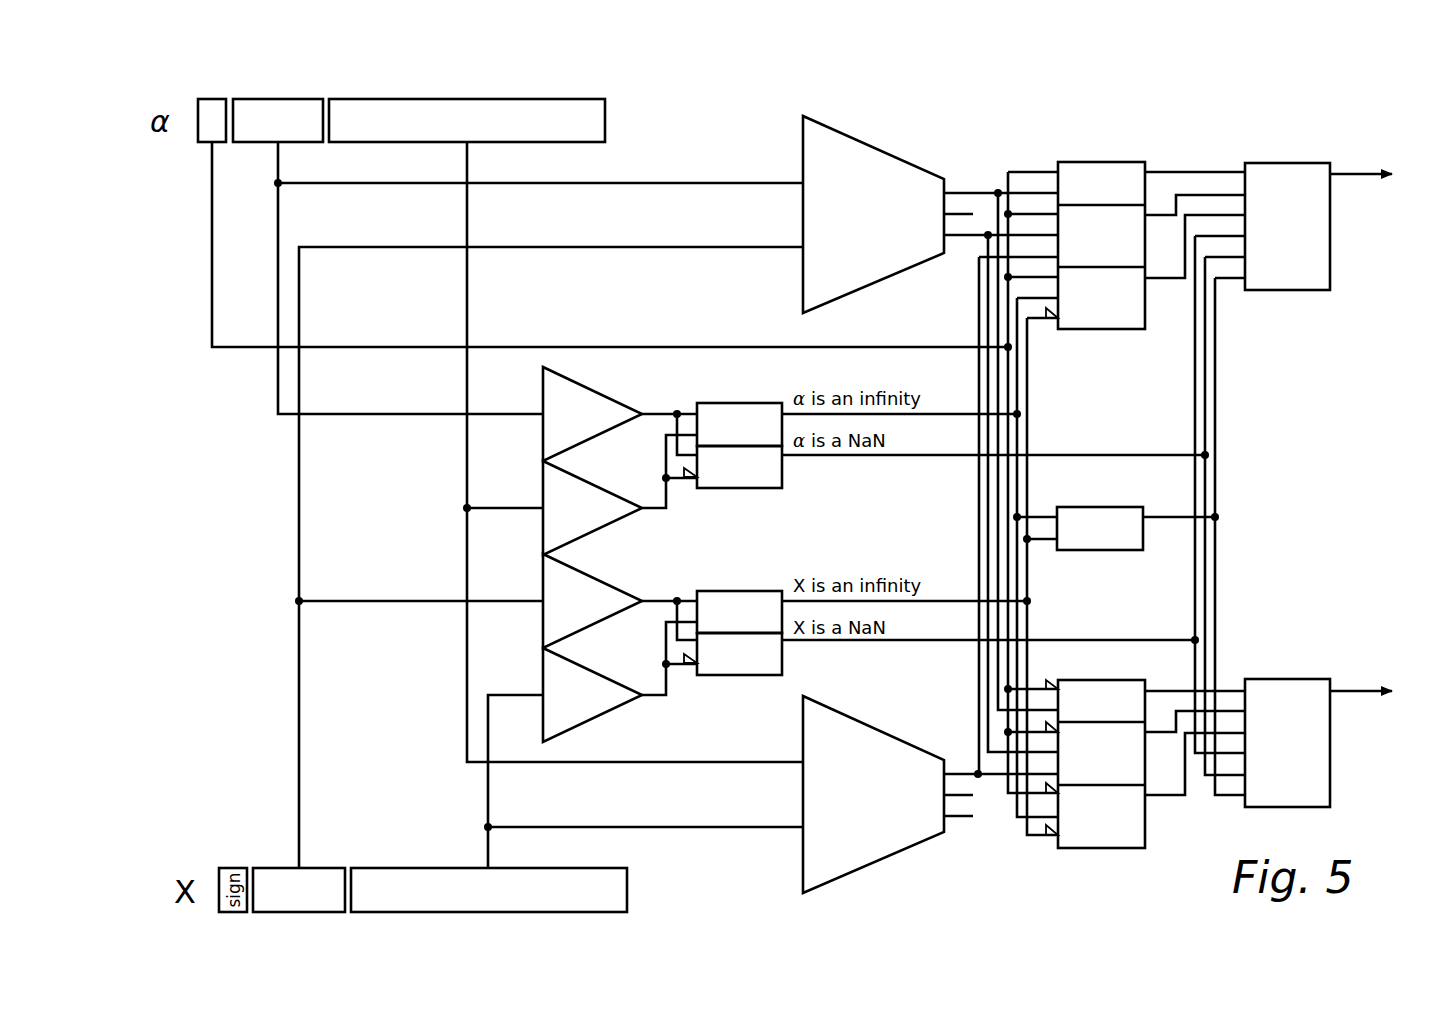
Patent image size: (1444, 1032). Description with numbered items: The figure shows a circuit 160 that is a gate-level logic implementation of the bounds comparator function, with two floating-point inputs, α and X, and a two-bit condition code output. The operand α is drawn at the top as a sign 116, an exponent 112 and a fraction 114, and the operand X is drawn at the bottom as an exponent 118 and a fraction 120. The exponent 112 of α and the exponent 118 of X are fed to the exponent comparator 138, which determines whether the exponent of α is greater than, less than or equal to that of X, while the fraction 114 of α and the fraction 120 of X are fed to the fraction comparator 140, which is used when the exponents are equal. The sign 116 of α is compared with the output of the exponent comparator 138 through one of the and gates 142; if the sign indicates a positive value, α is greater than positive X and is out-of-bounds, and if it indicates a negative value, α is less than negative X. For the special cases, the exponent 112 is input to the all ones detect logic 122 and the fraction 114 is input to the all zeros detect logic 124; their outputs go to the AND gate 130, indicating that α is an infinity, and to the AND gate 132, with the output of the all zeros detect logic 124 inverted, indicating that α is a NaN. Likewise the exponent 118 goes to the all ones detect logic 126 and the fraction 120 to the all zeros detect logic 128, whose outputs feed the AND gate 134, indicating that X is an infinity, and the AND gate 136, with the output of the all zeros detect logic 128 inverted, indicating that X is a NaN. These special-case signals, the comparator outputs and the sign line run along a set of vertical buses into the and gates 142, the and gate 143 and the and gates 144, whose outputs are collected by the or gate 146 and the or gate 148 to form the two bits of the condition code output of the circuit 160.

The exponent of α 112 is at (272, 168).
The fraction of α 114 is at (605, 122).
The sign of α 116 is at (198, 108).
The exponent of X 118 is at (340, 868).
The fraction of X 120 is at (627, 892).
The all ones detect logic 122 is at (600, 441).
The all zeros detect logic 124 is at (600, 535).
The all ones detect logic 126 is at (600, 628).
The all zeros detect logic 128 is at (602, 722).
The AND gate 130 is at (745, 403).
The AND gate 132 is at (745, 488).
The AND gate 134 is at (745, 591).
The AND gate 136 is at (745, 675).
The exponent comparator 138 is at (878, 145).
The fraction comparator 140 is at (878, 865).
The and gates 142 is at (1105, 329).
The and gate 143 is at (1105, 550).
The and gates 144 is at (1105, 848).
The or gate 146 is at (1330, 225).
The or gate 148 is at (1330, 742).
The circuit 160 is at (1158, 116).